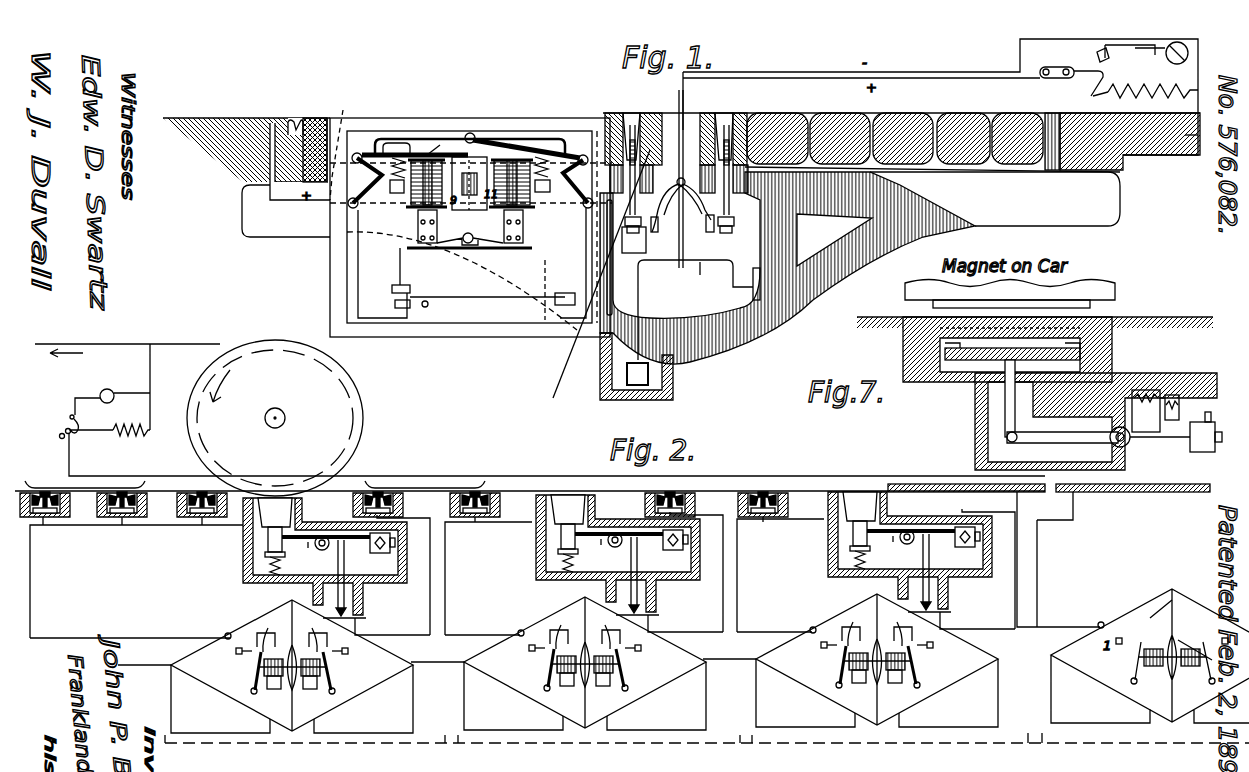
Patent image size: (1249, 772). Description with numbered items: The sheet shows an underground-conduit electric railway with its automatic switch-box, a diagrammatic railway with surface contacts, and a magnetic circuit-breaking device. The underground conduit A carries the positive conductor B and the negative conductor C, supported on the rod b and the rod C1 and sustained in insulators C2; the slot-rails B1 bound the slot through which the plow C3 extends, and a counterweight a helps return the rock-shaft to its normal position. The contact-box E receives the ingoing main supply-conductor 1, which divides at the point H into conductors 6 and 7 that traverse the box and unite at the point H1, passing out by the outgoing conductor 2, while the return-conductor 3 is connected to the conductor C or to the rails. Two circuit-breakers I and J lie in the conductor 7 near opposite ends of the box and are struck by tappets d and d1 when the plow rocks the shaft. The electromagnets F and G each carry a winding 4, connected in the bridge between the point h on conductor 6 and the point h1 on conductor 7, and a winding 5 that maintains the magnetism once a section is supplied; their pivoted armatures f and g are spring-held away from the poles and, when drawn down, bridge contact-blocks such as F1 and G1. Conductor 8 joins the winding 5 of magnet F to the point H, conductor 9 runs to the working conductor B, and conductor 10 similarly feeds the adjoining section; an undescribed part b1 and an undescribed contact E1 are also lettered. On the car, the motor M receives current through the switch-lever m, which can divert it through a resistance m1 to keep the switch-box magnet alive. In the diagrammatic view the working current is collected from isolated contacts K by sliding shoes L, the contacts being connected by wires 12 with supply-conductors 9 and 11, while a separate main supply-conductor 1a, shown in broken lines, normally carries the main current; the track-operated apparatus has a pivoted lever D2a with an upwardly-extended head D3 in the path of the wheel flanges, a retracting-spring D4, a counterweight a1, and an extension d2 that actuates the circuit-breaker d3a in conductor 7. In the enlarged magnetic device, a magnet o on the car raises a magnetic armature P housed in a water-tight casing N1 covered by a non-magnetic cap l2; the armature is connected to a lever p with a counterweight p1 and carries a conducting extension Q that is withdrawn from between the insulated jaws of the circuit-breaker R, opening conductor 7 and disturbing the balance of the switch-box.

In FIG. 1, the main supply-conductor (ingoing portion) 1 is at (271, 124).
In FIG. 2, the main supply-conductor (ingoing portion) 1 is at (144, 657).
In FIG. 1, the main supply-conductor 1a is at (341, 146).
In FIG. 2, the main supply-conductor 1a is at (707, 751).
In FIG. 1, the main supply-conductor (outgoing portion) 2 is at (875, 218).
In FIG. 1, the return-conductor 3 is at (1185, 135).
In FIG. 2, the return-conductor 3 is at (152, 378).
In FIG. 1, the winding 4 is at (530, 205).
In FIG. 1, the winding 5 is at (418, 216).
In FIG. 2, the winding 5 is at (271, 691).
In FIG. 1, the conductor 6 is at (432, 137).
In FIG. 2, the conductor 6 is at (246, 701).
In FIG. 1, the conductor 7 is at (450, 264).
In FIG. 2, the conductor 7 is at (245, 633).
In FIG. 1, the conductor 8 is at (391, 178).
In FIG. 2, the conductor 8 is at (220, 699).
In FIG. 2, the conductor 9 is at (427, 579).
In FIG. 1, the conductor 10 is at (550, 178).
In FIG. 2, the conductor 10 is at (363, 699).
In FIG. 2, the supply-conductor 11 is at (376, 575).
In FIG. 2, the wires 12 is at (1017, 505).
In FIG. 1, the underground conduit A is at (699, 310).
In FIG. 1, the positive conductor B is at (661, 216).
In FIG. 1, the slot-rails B1 is at (725, 115).
In FIG. 1, the negative conductor C is at (716, 233).
In FIG. 1, the rod C1 is at (736, 179).
In FIG. 1, the insulators C2 is at (748, 113).
In FIG. 1, the plow C3 is at (677, 92).
In FIG. 2, the upwardly-extended head D3 is at (279, 556).
In FIG. 2, the retracting-spring D4 is at (288, 566).
In FIG. 2, the pivoted lever D2a is at (326, 548).
In FIG. 2, the extension d2 is at (349, 578).
In FIG. 2, the circuit-breaker d3a is at (352, 612).
In FIG. 2, the counterweight a1 is at (382, 553).
In FIG. 1, the contact-box E is at (407, 124).
In FIG. 2, the contact-box E is at (308, 675).
In FIG. 2, the contact E1 is at (292, 652).
In FIG. 1, the electromagnet F is at (440, 160).
In FIG. 2, the electromagnet F is at (268, 640).
In FIG. 2, the contact-block F1 is at (258, 650).
In FIG. 1, the electromagnet G is at (517, 160).
In FIG. 2, the electromagnet G is at (313, 641).
In FIG. 2, the contact-block G1 is at (334, 669).
In FIG. 1, the dividing point H is at (365, 186).
In FIG. 2, the dividing point H is at (173, 655).
In FIG. 1, the uniting point H1 is at (576, 258).
In FIG. 2, the uniting point H1 is at (421, 651).
In FIG. 1, the circuit-breaker I is at (395, 296).
In FIG. 1, the circuit-breaker J is at (567, 297).
In FIG. 2, the isolated contacts K is at (682, 482).
In FIG. 2, the sliding shoes L is at (255, 481).
In FIG. 1, the car-motor M is at (1156, 45).
In FIG. 2, the car-motor M is at (112, 390).
In FIG. 7, the water-tight casing N1 is at (903, 350).
In FIG. 7, the magnetic armature P is at (1112, 348).
In FIG. 7, the extension Q is at (1152, 370).
In FIG. 7, the circuit-breaker R is at (1146, 411).
In FIG. 1, the counterweight a is at (636, 366).
In FIG. 1, the rod b is at (626, 257).
In FIG. 1, the contact b1 is at (705, 274).
In FIG. 1, the tappet d is at (555, 290).
In FIG. 1, the tappet d1 is at (430, 305).
In FIG. 1, the pivoted armature f is at (418, 157).
In FIG. 2, the pivoted armature f is at (294, 668).
In FIG. 1, the pivoted armature g is at (575, 170).
In FIG. 1, the bridge point h is at (473, 137).
In FIG. 2, the bridge point h is at (292, 657).
In FIG. 1, the bridge point h1 is at (470, 234).
In FIG. 2, the bridge point h1 is at (290, 735).
In FIG. 7, the water-tight cap l2 is at (945, 330).
In FIG. 1, the switch-lever m is at (1074, 72).
In FIG. 2, the switch-lever m is at (87, 444).
In FIG. 1, the resistance m1 is at (1153, 82).
In FIG. 2, the resistance m1 is at (131, 422).
In FIG. 7, the magnet o is at (1115, 290).
In FIG. 7, the lever p is at (1075, 442).
In FIG. 7, the counterweight p1 is at (1176, 441).